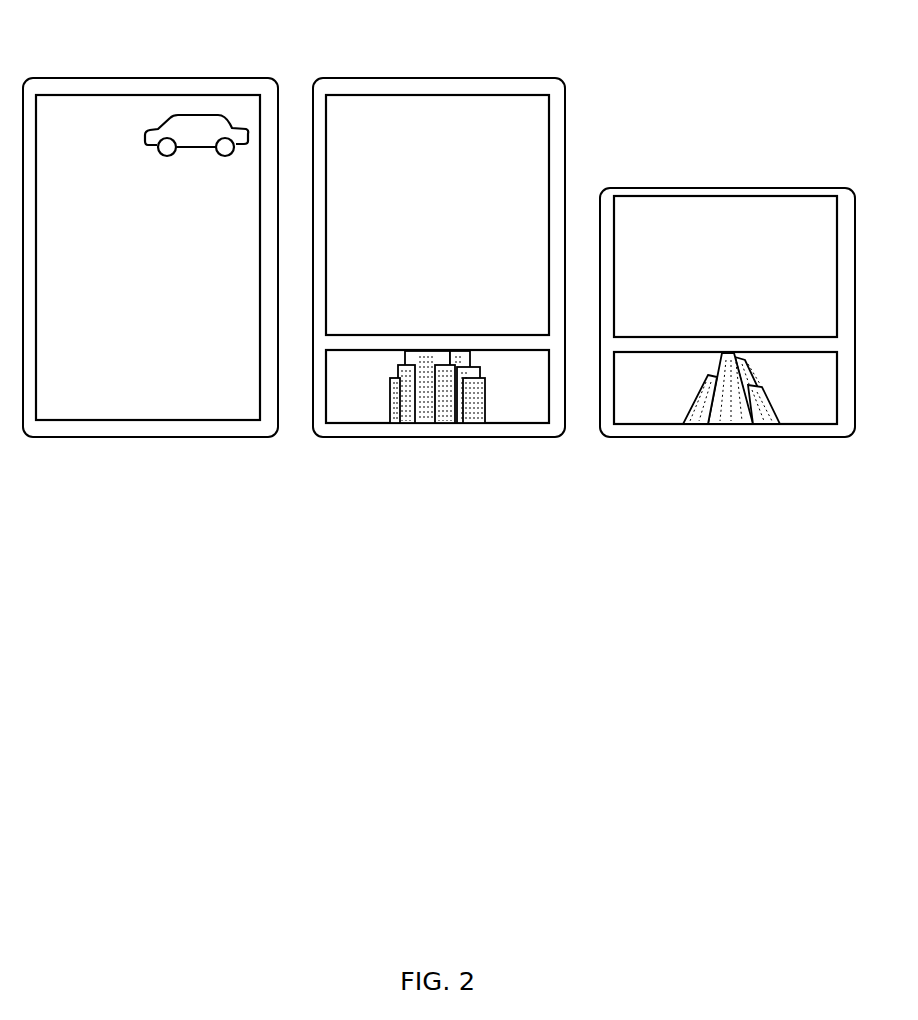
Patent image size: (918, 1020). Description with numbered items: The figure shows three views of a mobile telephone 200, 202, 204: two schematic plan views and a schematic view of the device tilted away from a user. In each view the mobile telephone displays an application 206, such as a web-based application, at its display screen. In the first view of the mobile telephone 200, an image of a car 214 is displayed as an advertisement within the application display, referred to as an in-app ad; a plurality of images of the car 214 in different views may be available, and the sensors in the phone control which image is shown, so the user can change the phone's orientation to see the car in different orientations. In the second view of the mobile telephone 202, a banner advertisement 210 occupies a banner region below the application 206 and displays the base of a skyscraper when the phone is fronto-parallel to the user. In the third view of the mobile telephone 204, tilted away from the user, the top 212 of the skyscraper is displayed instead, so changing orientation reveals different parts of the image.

The mobile telephone 200 is at (150, 256).
The mobile telephone 202 is at (439, 286).
The mobile telephone 204 is at (727, 341).
The application 206 is at (102, 95).
The banner advertisement 210 is at (377, 423).
The top of the skyscraper 212 is at (657, 424).
The image of a car 214 is at (197, 115).